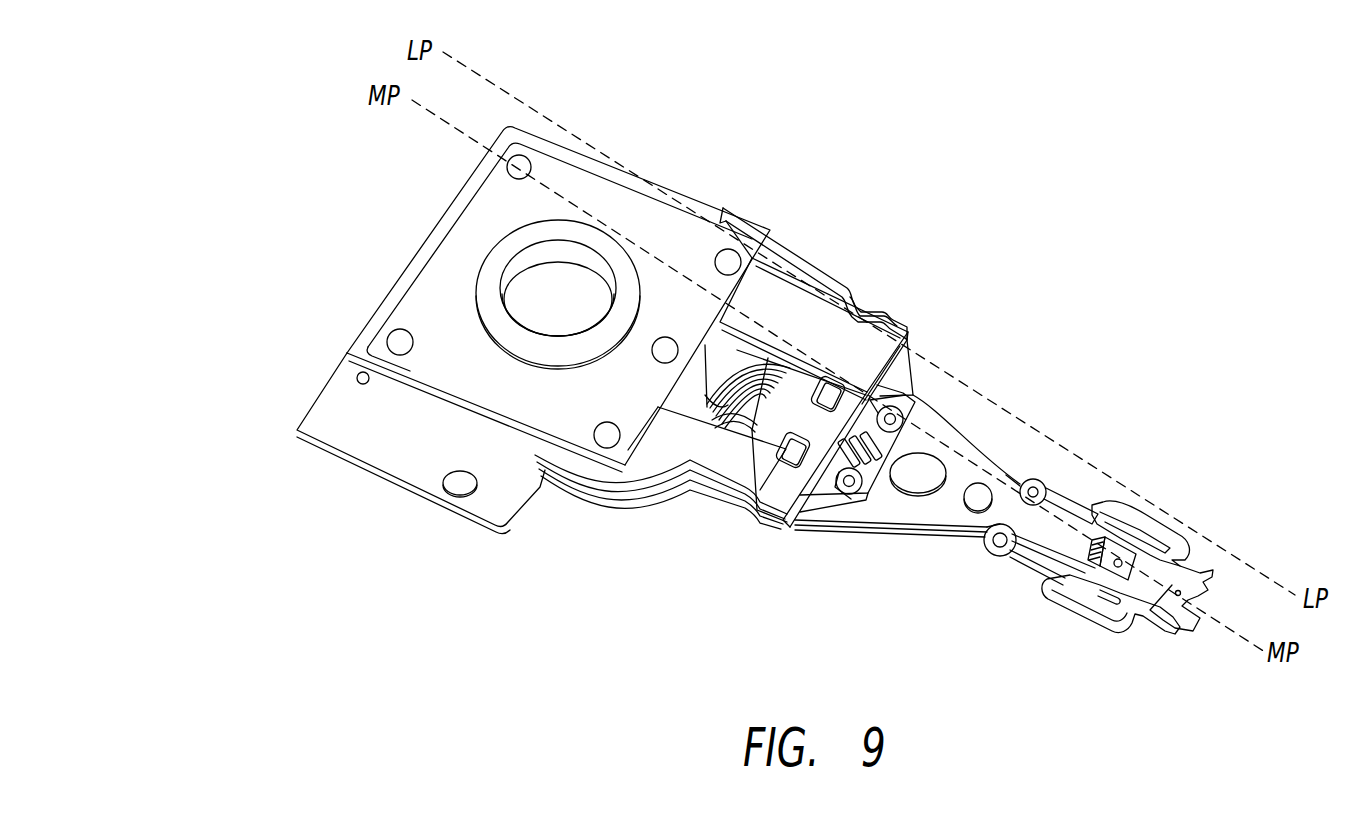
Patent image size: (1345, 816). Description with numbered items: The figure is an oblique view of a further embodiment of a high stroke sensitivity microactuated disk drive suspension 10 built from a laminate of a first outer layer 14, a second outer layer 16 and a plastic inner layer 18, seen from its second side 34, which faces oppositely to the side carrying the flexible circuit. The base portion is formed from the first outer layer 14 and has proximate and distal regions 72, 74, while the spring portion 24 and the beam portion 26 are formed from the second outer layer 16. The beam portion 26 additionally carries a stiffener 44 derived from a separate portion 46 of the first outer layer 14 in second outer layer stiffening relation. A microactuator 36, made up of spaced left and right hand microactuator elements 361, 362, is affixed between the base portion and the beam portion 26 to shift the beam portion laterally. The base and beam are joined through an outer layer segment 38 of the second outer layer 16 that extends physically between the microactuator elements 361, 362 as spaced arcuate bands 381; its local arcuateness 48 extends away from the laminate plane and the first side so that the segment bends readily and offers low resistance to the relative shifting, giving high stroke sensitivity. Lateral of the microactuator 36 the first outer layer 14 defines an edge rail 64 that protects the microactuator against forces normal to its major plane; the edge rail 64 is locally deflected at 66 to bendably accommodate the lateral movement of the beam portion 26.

The microactuated disk drive suspension 10 is at (351, 226).
The first outer layer 14 is at (762, 246).
The second outer layer 16 is at (830, 520).
The plastic inner layer 18 is at (798, 507).
The spring portion 24 is at (927, 370).
The beam portion 26 is at (953, 533).
The second side 34 is at (693, 315).
The microactuator 36 is at (767, 305).
The left hand microactuator element 361 is at (870, 352).
The right hand microactuator element 362 is at (658, 443).
The outer layer segment 38 is at (748, 413).
The arcuate band 381 is at (737, 413).
The stiffener 44 is at (983, 460).
The portion of the first outer layer 46 is at (700, 387).
The local arcuateness 48 is at (720, 402).
The edge rail 64 is at (797, 254).
The local deflection of edge rail 66 is at (860, 305).
The proximate region 72 is at (590, 530).
The distal region 74 is at (756, 570).